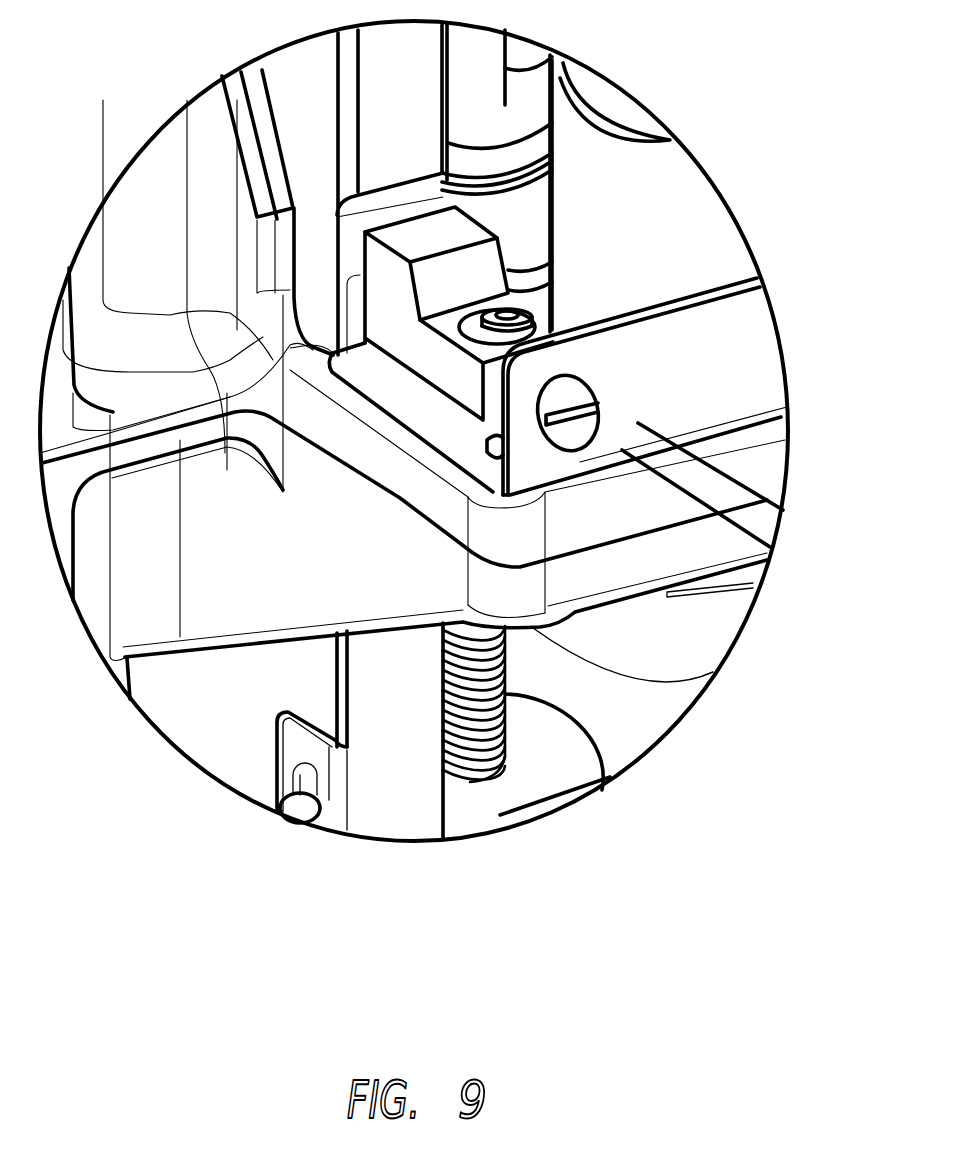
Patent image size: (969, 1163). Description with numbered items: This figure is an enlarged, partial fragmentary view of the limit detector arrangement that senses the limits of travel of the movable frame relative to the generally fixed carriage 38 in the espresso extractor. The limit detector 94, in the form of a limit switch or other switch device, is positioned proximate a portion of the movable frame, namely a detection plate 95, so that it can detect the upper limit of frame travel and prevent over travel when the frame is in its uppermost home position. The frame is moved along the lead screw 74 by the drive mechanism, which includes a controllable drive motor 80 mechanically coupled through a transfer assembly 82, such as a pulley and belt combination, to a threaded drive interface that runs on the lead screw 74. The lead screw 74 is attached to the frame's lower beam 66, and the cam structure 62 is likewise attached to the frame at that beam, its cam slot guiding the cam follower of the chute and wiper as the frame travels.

The carriage 38 is at (588, 587).
The cam structure 62 is at (210, 690).
The lower beam 66 is at (527, 778).
The lead screw 74 is at (538, 720).
The drive motor 80 is at (687, 218).
The transfer assembly 82 is at (693, 633).
The limit detector 94 is at (383, 275).
The detection plate 95 is at (390, 793).